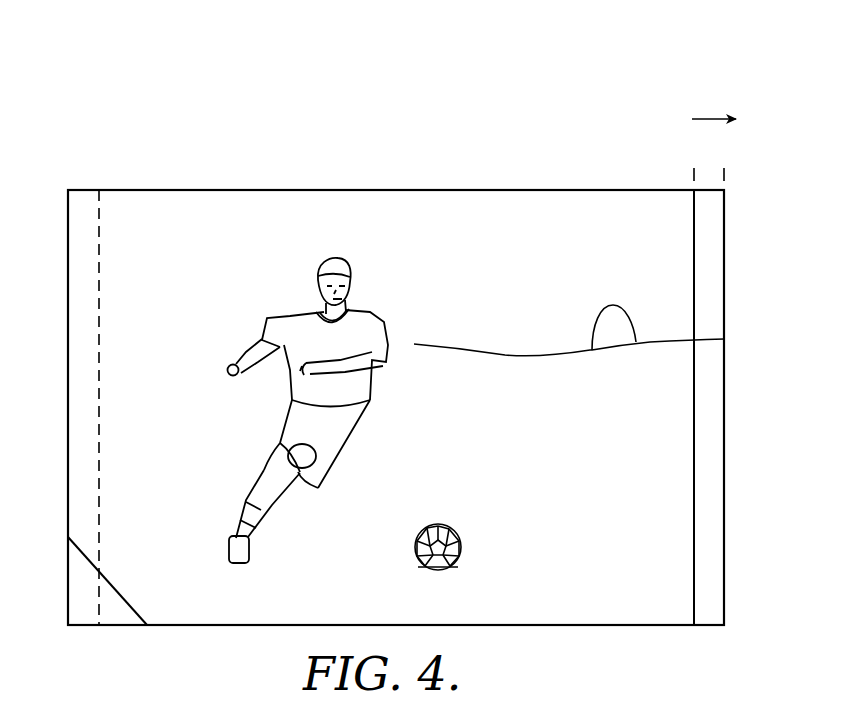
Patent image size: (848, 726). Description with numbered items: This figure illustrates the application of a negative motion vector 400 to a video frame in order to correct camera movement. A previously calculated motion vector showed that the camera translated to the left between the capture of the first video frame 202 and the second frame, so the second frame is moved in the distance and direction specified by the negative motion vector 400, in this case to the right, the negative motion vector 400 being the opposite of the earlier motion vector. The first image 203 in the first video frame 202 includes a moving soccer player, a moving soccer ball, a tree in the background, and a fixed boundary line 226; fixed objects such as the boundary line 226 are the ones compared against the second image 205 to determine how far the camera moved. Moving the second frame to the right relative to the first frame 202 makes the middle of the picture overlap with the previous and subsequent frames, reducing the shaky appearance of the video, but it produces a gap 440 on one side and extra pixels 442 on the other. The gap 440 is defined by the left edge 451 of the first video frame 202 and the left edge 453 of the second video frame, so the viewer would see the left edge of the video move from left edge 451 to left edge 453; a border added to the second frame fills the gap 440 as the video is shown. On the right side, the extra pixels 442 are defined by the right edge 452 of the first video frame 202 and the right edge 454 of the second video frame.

The first video frame 202 is at (561, 625).
The first image 203 is at (183, 291).
The second image 205 is at (719, 338).
The boundary line 226 is at (107, 576).
The negative motion vector 400 is at (724, 122).
The gap 440 is at (88, 416).
The extra pixels 442 is at (715, 395).
The left edge 451 is at (66, 370).
The right edge 452 is at (701, 435).
The left edge 453 is at (97, 337).
The right edge 454 is at (727, 493).